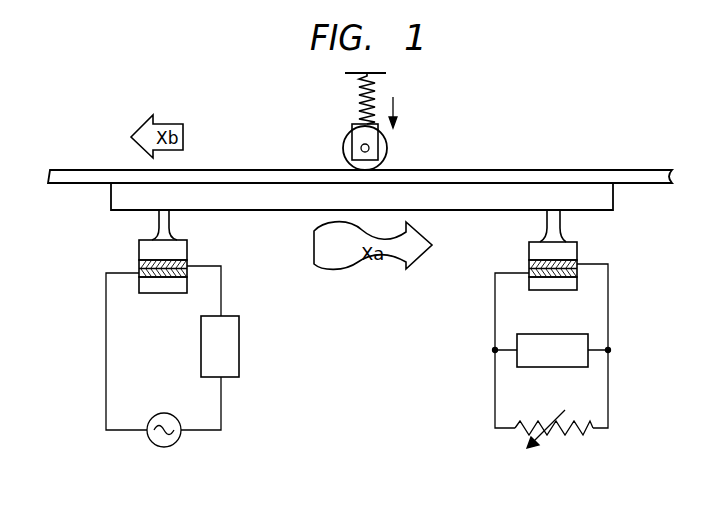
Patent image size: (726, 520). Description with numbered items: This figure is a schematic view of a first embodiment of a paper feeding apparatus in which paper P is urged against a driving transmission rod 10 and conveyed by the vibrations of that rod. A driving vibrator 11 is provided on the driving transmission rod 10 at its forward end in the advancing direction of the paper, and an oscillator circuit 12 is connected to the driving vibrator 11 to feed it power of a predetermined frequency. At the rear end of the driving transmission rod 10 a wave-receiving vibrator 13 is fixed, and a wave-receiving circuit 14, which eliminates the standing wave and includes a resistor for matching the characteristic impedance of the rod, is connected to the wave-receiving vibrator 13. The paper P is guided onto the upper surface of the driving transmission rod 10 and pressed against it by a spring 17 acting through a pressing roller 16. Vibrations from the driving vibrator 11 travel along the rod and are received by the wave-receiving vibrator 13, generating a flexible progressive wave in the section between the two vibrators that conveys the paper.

The paper P is at (575, 170).
The driving transmission rod 10 is at (272, 197).
The driving vibrator 11 is at (147, 252).
The oscillator circuit 12 is at (100, 377).
The wave-receiving vibrator 13 is at (571, 253).
The wave-receiving circuit 14 is at (617, 375).
The pressing roller 16 is at (385, 152).
The spring 17 is at (360, 96).